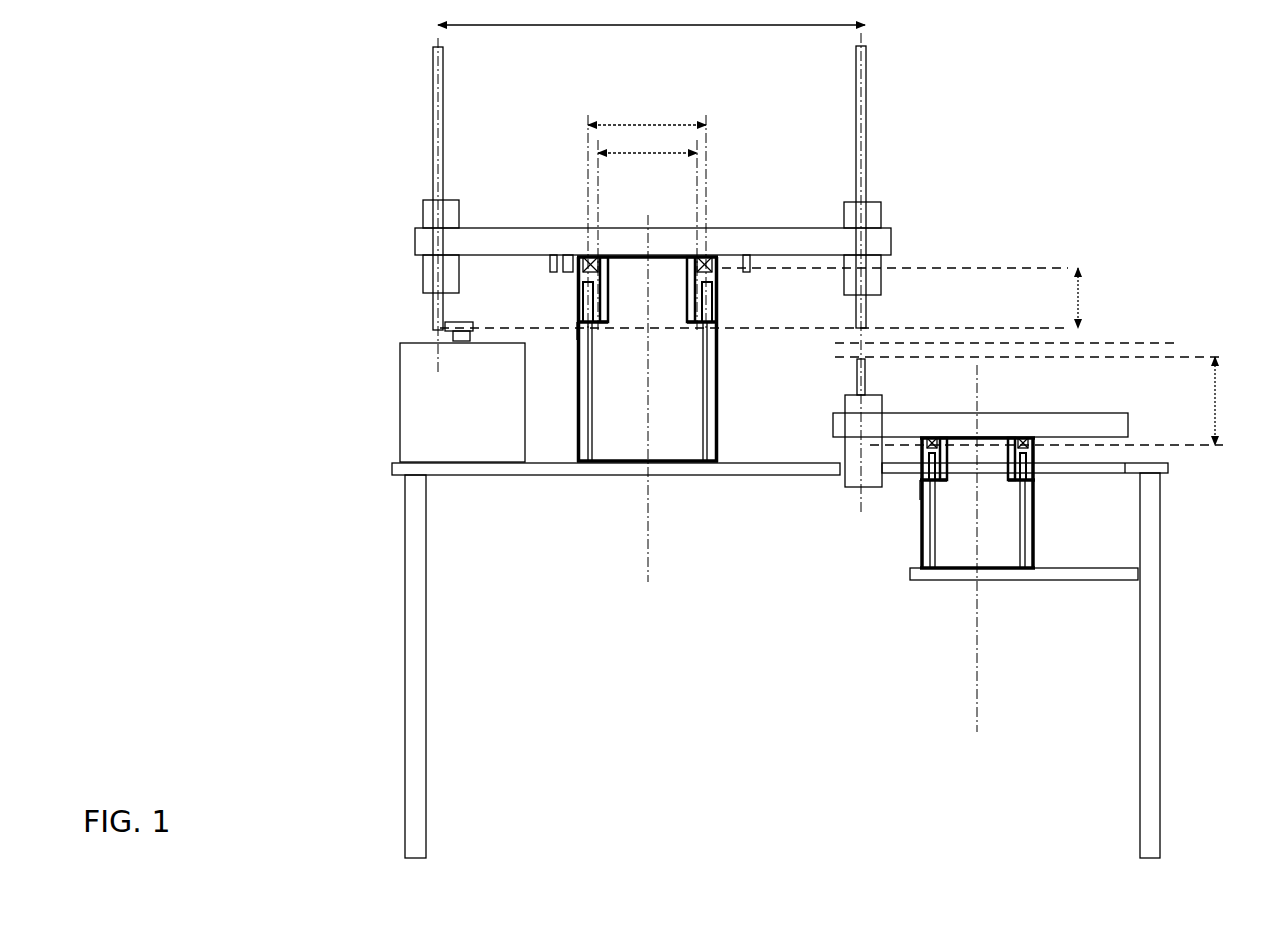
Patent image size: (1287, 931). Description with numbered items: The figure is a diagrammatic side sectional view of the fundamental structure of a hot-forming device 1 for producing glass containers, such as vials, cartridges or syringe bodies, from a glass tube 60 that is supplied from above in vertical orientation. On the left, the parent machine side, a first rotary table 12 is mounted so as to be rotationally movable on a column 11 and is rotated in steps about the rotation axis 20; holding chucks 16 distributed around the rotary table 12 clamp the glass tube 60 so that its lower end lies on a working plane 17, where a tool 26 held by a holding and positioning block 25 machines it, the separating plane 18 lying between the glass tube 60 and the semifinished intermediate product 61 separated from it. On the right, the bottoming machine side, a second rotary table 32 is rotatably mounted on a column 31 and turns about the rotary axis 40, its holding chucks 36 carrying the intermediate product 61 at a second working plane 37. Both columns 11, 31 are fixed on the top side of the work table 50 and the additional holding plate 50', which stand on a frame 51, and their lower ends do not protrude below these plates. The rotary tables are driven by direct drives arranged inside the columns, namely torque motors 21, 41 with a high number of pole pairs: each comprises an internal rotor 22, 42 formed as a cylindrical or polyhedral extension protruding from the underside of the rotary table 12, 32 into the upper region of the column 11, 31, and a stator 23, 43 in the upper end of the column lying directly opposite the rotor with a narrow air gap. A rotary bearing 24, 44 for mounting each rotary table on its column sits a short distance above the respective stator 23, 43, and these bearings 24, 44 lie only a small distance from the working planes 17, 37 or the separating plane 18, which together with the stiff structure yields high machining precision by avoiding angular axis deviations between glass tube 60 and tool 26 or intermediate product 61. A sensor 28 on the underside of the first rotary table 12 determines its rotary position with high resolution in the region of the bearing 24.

The hot-forming device 1 is at (151, 84).
The column 11 is at (720, 389).
The rotary table 12 is at (758, 228).
The holding chuck 16 is at (427, 213).
The working plane 17 is at (945, 328).
The separating plane 18 is at (1127, 343).
The rotation axis 20 is at (655, 514).
The torque motor 21 is at (607, 323).
The rotor 22 is at (698, 293).
The stator 23 is at (703, 298).
The bearing 24 is at (715, 268).
The holding and positioning block 25 is at (400, 403).
The tool 26 is at (458, 319).
The sensor for determining a rotary position 28 is at (572, 273).
The column 31 is at (1030, 525).
The rotary table 32 is at (1014, 428).
The holding chuck 36 is at (882, 395).
The working plane 37 is at (1167, 355).
The rotary axis 40 is at (973, 674).
The torque motor 41 is at (925, 482).
The rotor 42 is at (1007, 478).
The stator 43 is at (1030, 470).
The bearing 44 is at (1032, 445).
The work table 50 is at (1046, 447).
The additional holding plate 50' is at (1024, 614).
The frame 51 is at (1148, 624).
The glass tube 60 is at (433, 90).
The intermediate product 61 is at (867, 378).